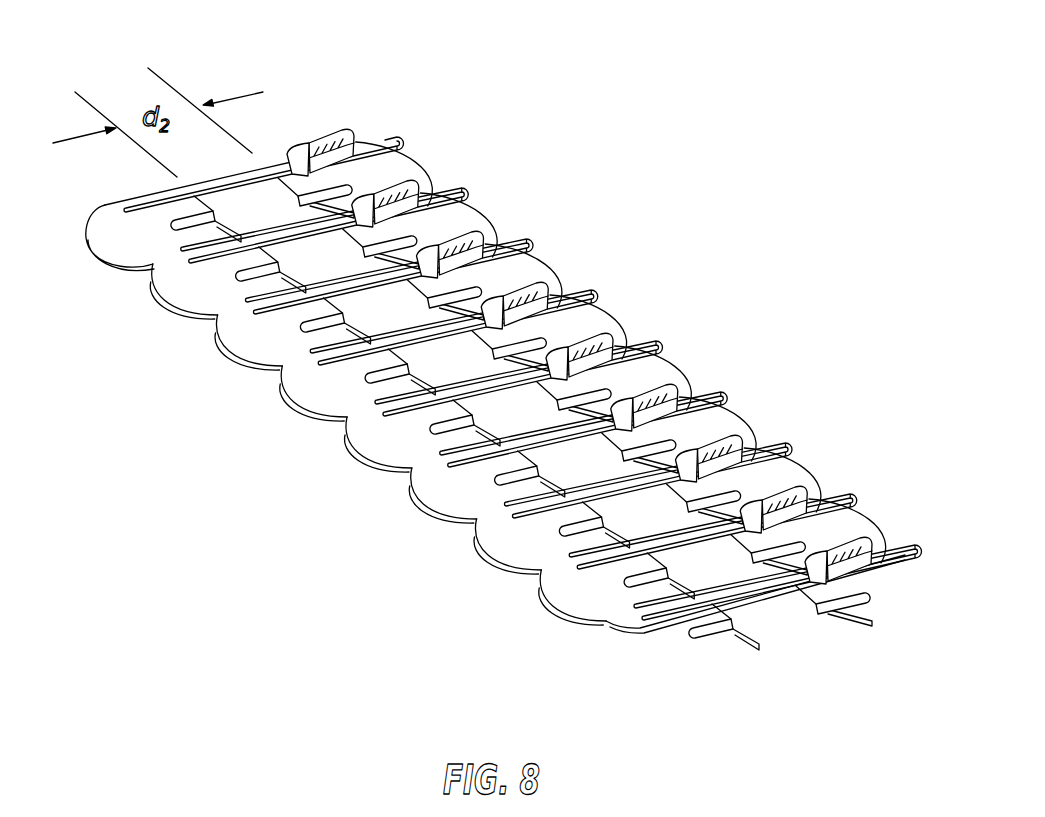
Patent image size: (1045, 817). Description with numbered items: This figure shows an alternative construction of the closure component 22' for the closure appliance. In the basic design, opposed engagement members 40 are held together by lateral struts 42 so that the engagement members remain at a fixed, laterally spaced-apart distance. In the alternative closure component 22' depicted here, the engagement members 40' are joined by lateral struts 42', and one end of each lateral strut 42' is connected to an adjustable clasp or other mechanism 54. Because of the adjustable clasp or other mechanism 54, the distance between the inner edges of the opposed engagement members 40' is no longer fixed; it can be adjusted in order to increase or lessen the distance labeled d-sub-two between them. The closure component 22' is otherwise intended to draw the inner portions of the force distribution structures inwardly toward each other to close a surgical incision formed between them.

The closure component 22' is at (505, 321).
The opposed engagement members 40 is at (479, 414).
The engagement members 40' is at (640, 311).
The lateral struts 42 is at (675, 549).
The lateral strut 42' is at (256, 283).
The adjustable clasp or other mechanism 54 is at (527, 275).